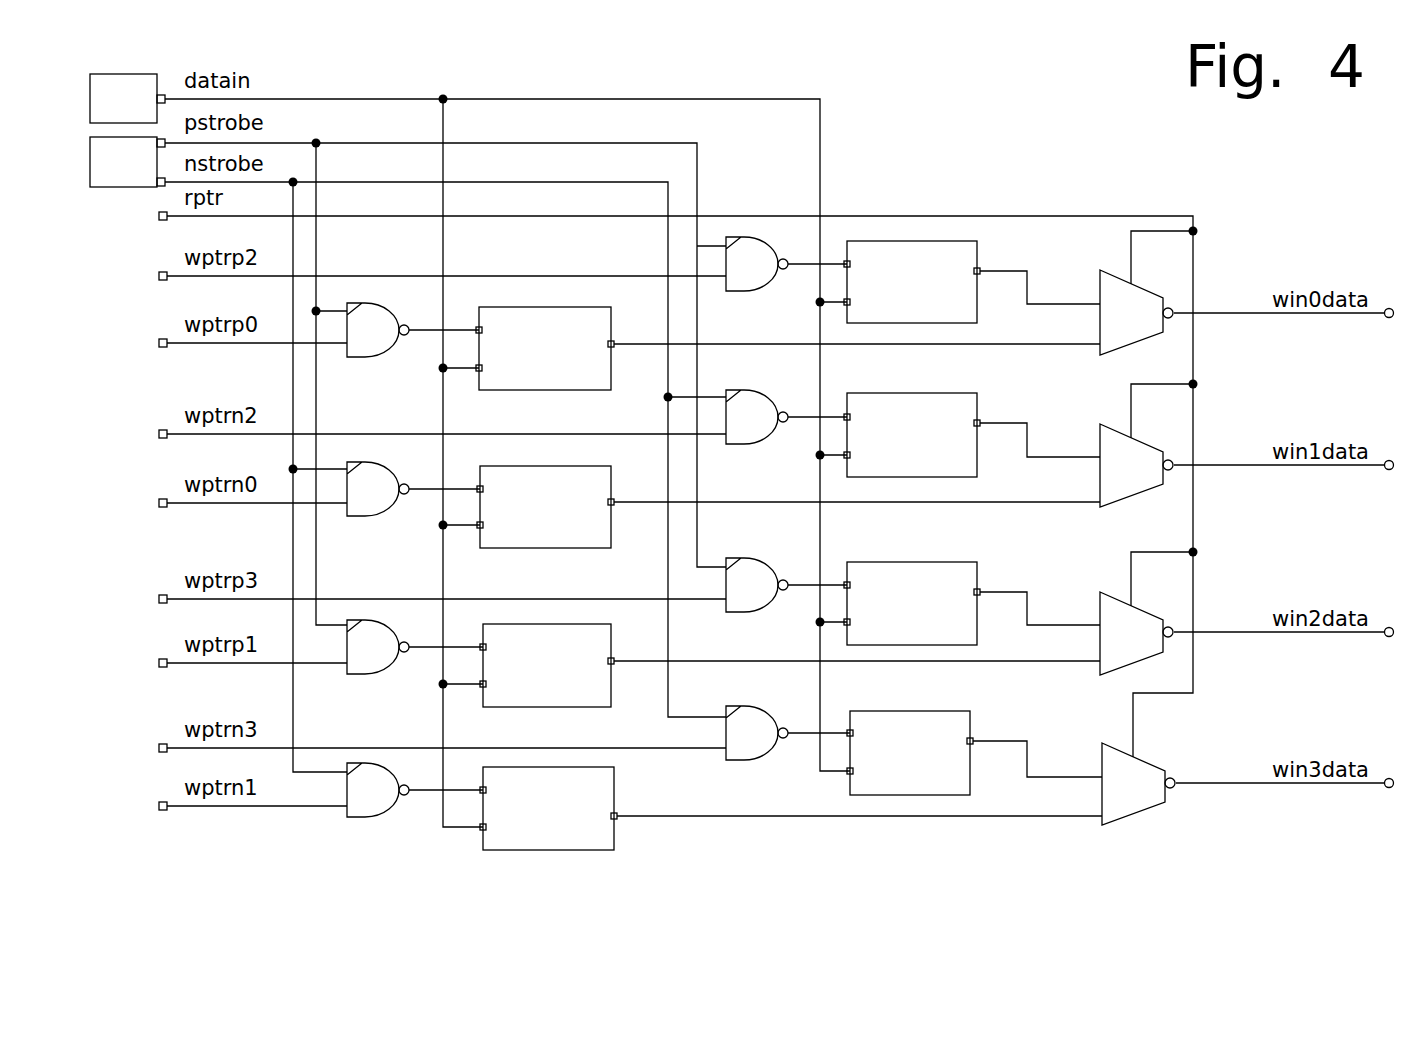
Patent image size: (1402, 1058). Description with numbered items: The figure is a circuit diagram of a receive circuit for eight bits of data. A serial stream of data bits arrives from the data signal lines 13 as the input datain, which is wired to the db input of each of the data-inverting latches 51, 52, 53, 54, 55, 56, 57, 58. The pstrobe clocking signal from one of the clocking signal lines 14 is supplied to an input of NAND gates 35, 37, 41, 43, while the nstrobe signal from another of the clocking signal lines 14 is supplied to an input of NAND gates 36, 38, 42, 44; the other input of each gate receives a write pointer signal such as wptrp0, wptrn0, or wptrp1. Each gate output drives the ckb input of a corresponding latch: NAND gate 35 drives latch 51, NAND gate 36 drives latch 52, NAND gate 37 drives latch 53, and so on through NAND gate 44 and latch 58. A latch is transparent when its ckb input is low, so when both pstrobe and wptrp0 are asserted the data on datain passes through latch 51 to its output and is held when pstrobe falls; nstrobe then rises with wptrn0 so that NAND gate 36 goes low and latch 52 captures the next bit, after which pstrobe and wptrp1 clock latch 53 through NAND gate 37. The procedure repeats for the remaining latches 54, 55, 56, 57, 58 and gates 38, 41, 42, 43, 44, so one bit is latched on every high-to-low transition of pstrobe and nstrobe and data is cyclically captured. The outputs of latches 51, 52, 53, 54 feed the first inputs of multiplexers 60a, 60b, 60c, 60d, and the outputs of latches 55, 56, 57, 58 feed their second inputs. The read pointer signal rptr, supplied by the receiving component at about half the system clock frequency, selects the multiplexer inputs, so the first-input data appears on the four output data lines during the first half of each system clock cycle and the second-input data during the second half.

The data signal lines 13 is at (123, 73).
The clocking signal lines 14 is at (120, 188).
The NAND gate 35 is at (357, 358).
The NAND gate 36 is at (361, 517).
The NAND gate 37 is at (361, 675).
The NAND gate 38 is at (364, 818).
The NAND gate 41 is at (737, 292).
The NAND gate 42 is at (737, 445).
The NAND gate 43 is at (737, 613).
The NAND gate 44 is at (737, 761).
The data-inverting latch 51 is at (612, 372).
The data-inverting latch 52 is at (612, 530).
The data-inverting latch 53 is at (612, 688).
The data-inverting latch 54 is at (614, 790).
The data-inverting latch 55 is at (977, 292).
The data-inverting latch 56 is at (918, 393).
The data-inverting latch 57 is at (912, 562).
The data-inverting latch 58 is at (914, 711).
The multiplexer 60a is at (1122, 272).
The multiplexer 60b is at (1112, 424).
The multiplexer 60c is at (1112, 592).
The multiplexer 60d is at (1112, 743).